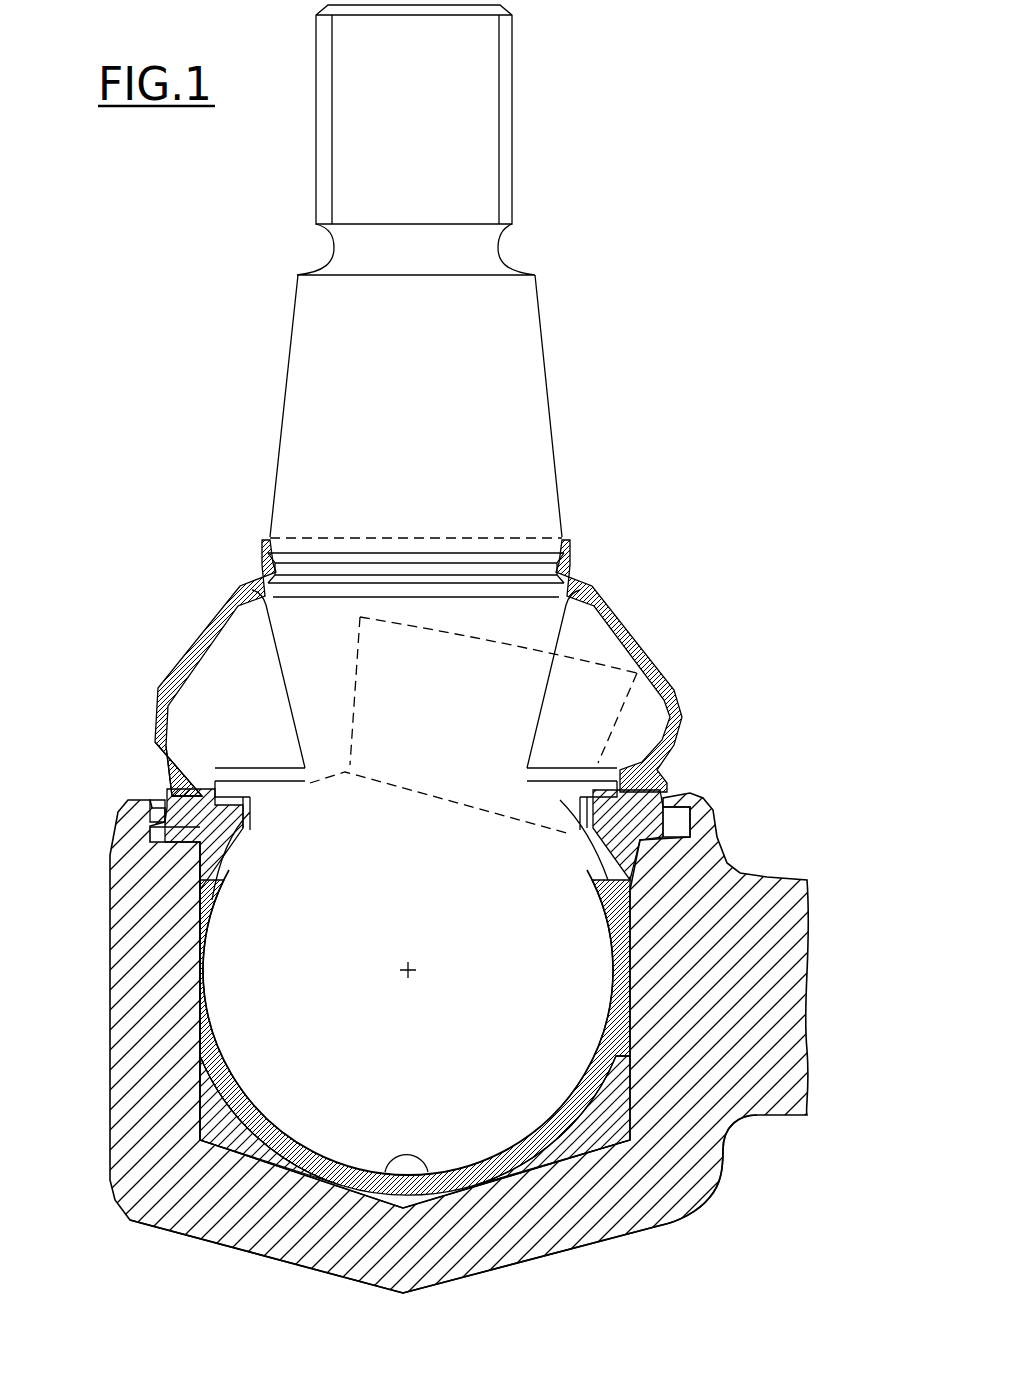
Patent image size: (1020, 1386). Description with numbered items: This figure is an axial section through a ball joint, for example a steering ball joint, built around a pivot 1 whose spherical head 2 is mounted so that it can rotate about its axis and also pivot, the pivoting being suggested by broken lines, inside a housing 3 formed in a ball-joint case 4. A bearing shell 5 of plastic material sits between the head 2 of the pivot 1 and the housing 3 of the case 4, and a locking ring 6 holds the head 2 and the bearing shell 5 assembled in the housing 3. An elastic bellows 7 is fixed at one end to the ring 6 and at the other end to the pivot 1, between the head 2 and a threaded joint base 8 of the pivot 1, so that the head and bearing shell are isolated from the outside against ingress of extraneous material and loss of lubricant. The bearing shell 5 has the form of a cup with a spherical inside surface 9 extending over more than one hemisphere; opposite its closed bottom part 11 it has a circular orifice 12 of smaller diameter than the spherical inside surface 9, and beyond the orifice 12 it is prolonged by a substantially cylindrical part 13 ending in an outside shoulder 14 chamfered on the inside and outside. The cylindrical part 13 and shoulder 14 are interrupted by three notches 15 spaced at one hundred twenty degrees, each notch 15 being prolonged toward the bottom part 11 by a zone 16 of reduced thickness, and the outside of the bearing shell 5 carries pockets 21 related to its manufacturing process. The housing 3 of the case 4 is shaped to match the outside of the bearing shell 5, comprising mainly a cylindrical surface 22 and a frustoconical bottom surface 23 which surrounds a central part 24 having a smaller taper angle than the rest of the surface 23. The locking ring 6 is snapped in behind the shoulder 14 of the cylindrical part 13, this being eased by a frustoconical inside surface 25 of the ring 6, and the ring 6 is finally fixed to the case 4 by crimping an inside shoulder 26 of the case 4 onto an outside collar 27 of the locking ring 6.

The pivot 1 is at (565, 408).
The spherical head 2 is at (530, 940).
The housing 3 is at (645, 1033).
The ball-joint case 4 is at (738, 1152).
The bearing shell 5 is at (638, 1001).
The locking ring 6 is at (640, 810).
The elastic bellows 7 is at (615, 620).
The threaded joint base 8 is at (452, 99).
The spherical inside surface 9 is at (233, 1012).
The closed bottom part 11 is at (260, 1197).
The circular orifice 12 is at (243, 770).
The cylindrical part 13 is at (590, 820).
The outside shoulder 14 is at (647, 777).
The notches 15 is at (173, 780).
The zone of reduced thickness 16 is at (208, 898).
The pockets 21 is at (608, 1090).
The cylindrical surface 22 is at (205, 985).
The frustoconical bottom surface 23 is at (180, 1233).
The central part 24 is at (323, 1272).
The frustoconical inside surface 25 is at (193, 850).
The inside shoulder 26 is at (148, 807).
The outside collar 27 is at (157, 825).